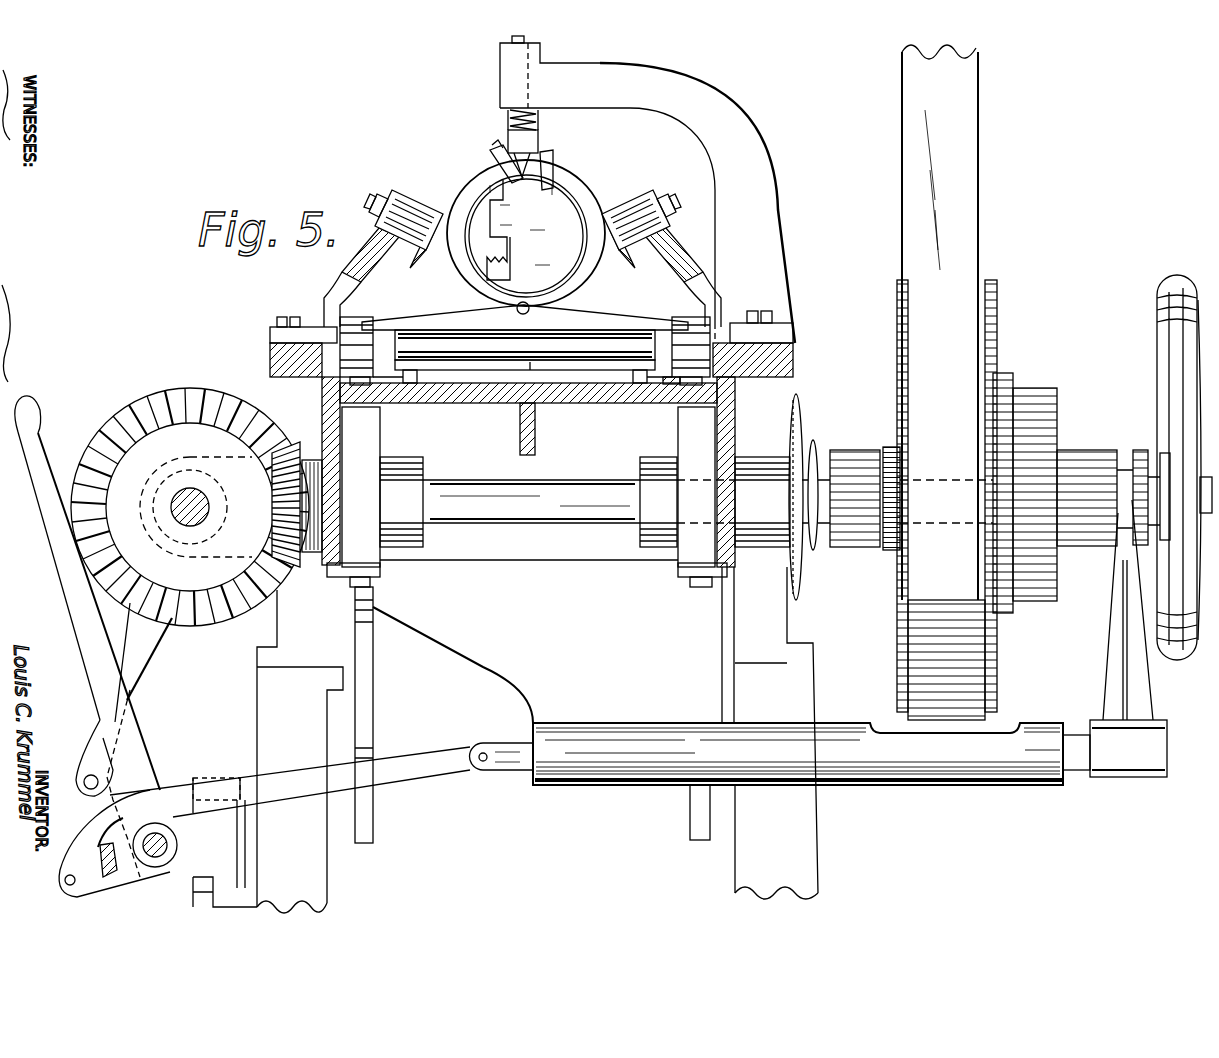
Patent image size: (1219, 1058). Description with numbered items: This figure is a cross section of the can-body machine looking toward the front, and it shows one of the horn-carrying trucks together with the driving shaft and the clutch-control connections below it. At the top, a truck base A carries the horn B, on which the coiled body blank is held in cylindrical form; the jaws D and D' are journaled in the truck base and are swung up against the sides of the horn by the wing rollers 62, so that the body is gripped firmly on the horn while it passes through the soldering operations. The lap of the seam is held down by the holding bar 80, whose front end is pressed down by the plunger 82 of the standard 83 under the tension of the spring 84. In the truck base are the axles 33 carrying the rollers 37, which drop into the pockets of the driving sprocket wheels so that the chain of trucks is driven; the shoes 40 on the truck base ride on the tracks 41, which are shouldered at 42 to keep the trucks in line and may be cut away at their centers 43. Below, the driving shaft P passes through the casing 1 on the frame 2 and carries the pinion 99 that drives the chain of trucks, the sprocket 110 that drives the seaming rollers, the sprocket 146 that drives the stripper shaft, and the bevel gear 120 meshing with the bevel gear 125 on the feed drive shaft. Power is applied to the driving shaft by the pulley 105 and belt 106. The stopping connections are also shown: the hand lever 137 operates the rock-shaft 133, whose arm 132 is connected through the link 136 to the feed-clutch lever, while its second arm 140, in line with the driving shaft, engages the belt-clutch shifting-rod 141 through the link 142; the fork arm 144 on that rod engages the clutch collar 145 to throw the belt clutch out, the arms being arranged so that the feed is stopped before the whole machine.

The casing 1 is at (322, 418).
The frame 2 is at (257, 733).
The axle 33 is at (525, 357).
The roller 37 is at (365, 322).
The shoe 40 is at (630, 372).
The track 41 is at (411, 384).
The track shoulder 42 is at (651, 384).
The track center 43 is at (528, 373).
The wing roller 62 is at (404, 190).
The holding bar 80 is at (528, 168).
The plunger 82 is at (500, 58).
The standard 83 is at (500, 88).
The spring 84 is at (508, 120).
The pinion 99 is at (868, 548).
The pulley 105 is at (992, 342).
The belt 106 is at (968, 242).
The sprocket 110 is at (803, 572).
The bevel gear 120 is at (310, 566).
The bevel gear 125 is at (187, 381).
The arm 132 is at (98, 798).
The rock-shaft 133 is at (168, 845).
The link 136 is at (130, 673).
The hand lever 137 is at (60, 555).
The second arm 140 is at (148, 872).
The belt-clutch shifting-rod 141 is at (513, 772).
The link 142 is at (445, 773).
The fork arm 144 is at (1122, 663).
The clutch collar 145 is at (1100, 452).
The sprocket 146 is at (820, 454).
The truck base A is at (590, 327).
The horn B is at (526, 236).
The jaw D is at (570, 228).
The jaw D' is at (478, 223).
The driving shaft P is at (553, 487).